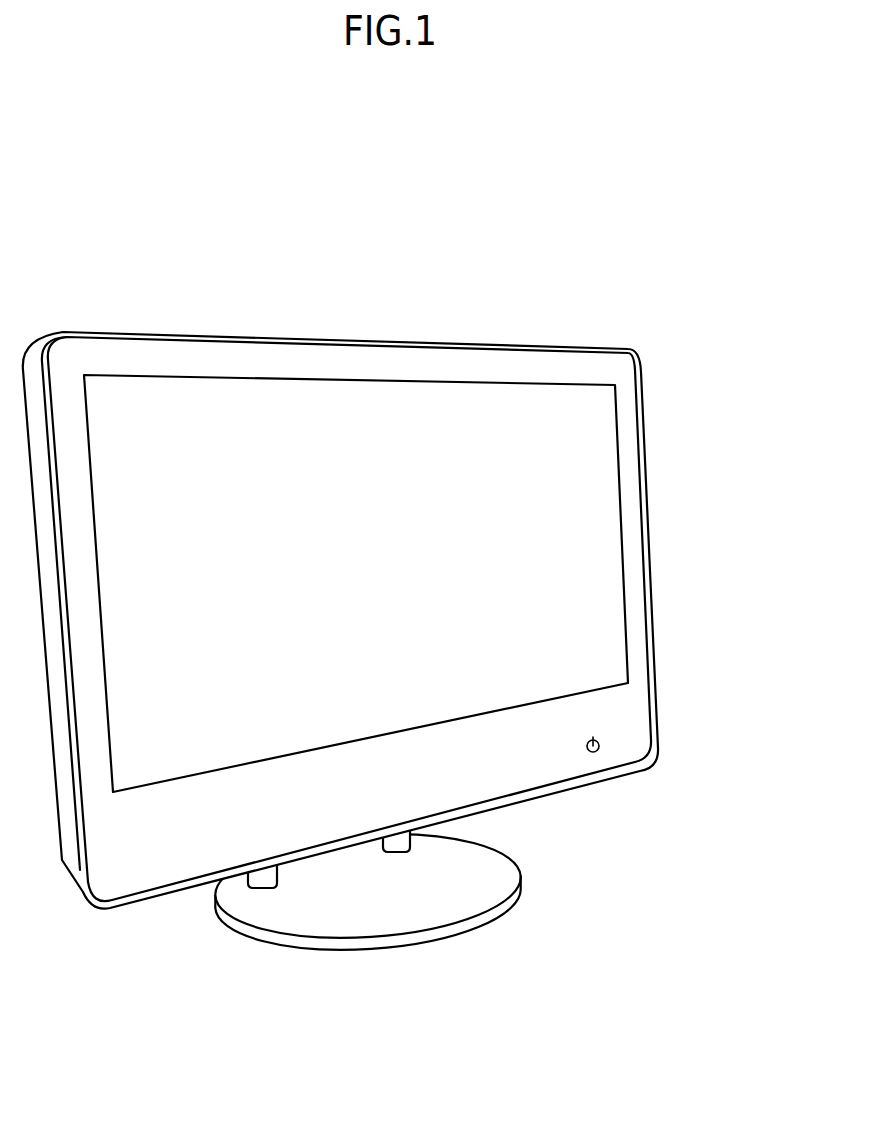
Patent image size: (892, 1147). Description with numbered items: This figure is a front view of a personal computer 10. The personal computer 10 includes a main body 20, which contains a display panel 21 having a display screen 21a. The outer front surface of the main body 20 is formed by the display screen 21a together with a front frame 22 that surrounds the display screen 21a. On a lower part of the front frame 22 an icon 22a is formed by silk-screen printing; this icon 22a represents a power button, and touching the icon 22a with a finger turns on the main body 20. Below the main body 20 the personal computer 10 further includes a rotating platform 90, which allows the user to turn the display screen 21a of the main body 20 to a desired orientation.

The personal computer 10 is at (395, 576).
The main body 20 is at (395, 584).
The display panel 21 is at (425, 583).
The display screen 21a is at (587, 450).
The front frame 22 is at (391, 619).
The icon 22a is at (598, 742).
The rotating platform 90 is at (490, 870).